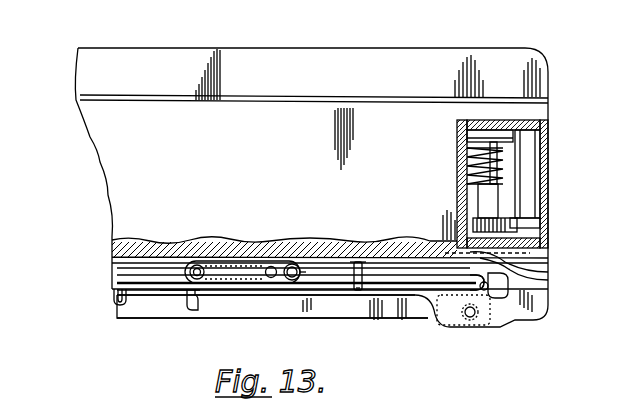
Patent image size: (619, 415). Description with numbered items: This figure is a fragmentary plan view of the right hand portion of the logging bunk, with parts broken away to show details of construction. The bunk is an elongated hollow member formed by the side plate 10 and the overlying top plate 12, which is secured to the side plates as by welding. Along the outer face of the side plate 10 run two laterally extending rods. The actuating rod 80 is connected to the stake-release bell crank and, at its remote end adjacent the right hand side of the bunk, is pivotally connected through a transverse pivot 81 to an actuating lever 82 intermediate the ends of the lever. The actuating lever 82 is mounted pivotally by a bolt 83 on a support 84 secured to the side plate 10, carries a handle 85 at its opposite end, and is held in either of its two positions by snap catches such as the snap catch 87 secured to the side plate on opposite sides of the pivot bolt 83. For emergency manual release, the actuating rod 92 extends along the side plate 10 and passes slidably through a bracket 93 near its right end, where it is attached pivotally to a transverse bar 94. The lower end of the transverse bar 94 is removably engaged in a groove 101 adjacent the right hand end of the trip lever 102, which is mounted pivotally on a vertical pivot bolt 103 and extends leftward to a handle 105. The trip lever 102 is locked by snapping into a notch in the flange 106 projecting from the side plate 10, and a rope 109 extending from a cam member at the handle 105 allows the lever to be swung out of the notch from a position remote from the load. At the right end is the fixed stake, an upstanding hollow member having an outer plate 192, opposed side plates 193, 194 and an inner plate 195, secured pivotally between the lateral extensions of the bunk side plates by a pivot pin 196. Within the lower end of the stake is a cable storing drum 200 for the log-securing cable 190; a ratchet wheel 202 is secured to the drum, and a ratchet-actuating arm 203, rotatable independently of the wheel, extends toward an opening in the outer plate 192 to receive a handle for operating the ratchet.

The top plate 12 is at (102, 137).
The side plate 10 is at (137, 252).
The actuating rod 80 is at (160, 270).
The actuating lever 82 is at (228, 263).
The handle 85 is at (200, 265).
The transverse pivot 81 is at (269, 264).
The pivot bolt 83 is at (292, 263).
The support 84 is at (313, 272).
The snap catch 87 is at (358, 262).
The actuating rod 92 is at (327, 283).
The bracket 93 is at (358, 292).
The trip lever 102 is at (254, 294).
The vertical pivot bolt 103 is at (470, 320).
The handle 105 is at (177, 293).
The flange 106 is at (198, 312).
The rope 109 is at (117, 308).
The inner plate 195 is at (461, 136).
The outer plate 192 is at (548, 147).
The side plate 194 is at (514, 127).
The cable 190 is at (468, 162).
The cable storing drum 200 is at (480, 198).
The pivot pin 196 is at (527, 162).
The ratchet wheel 202 is at (517, 223).
The ratchet-actuating arm 203 is at (515, 234).
The side plate 193 is at (525, 254).
The groove 101 is at (488, 280).
The transverse bar 94 is at (500, 287).